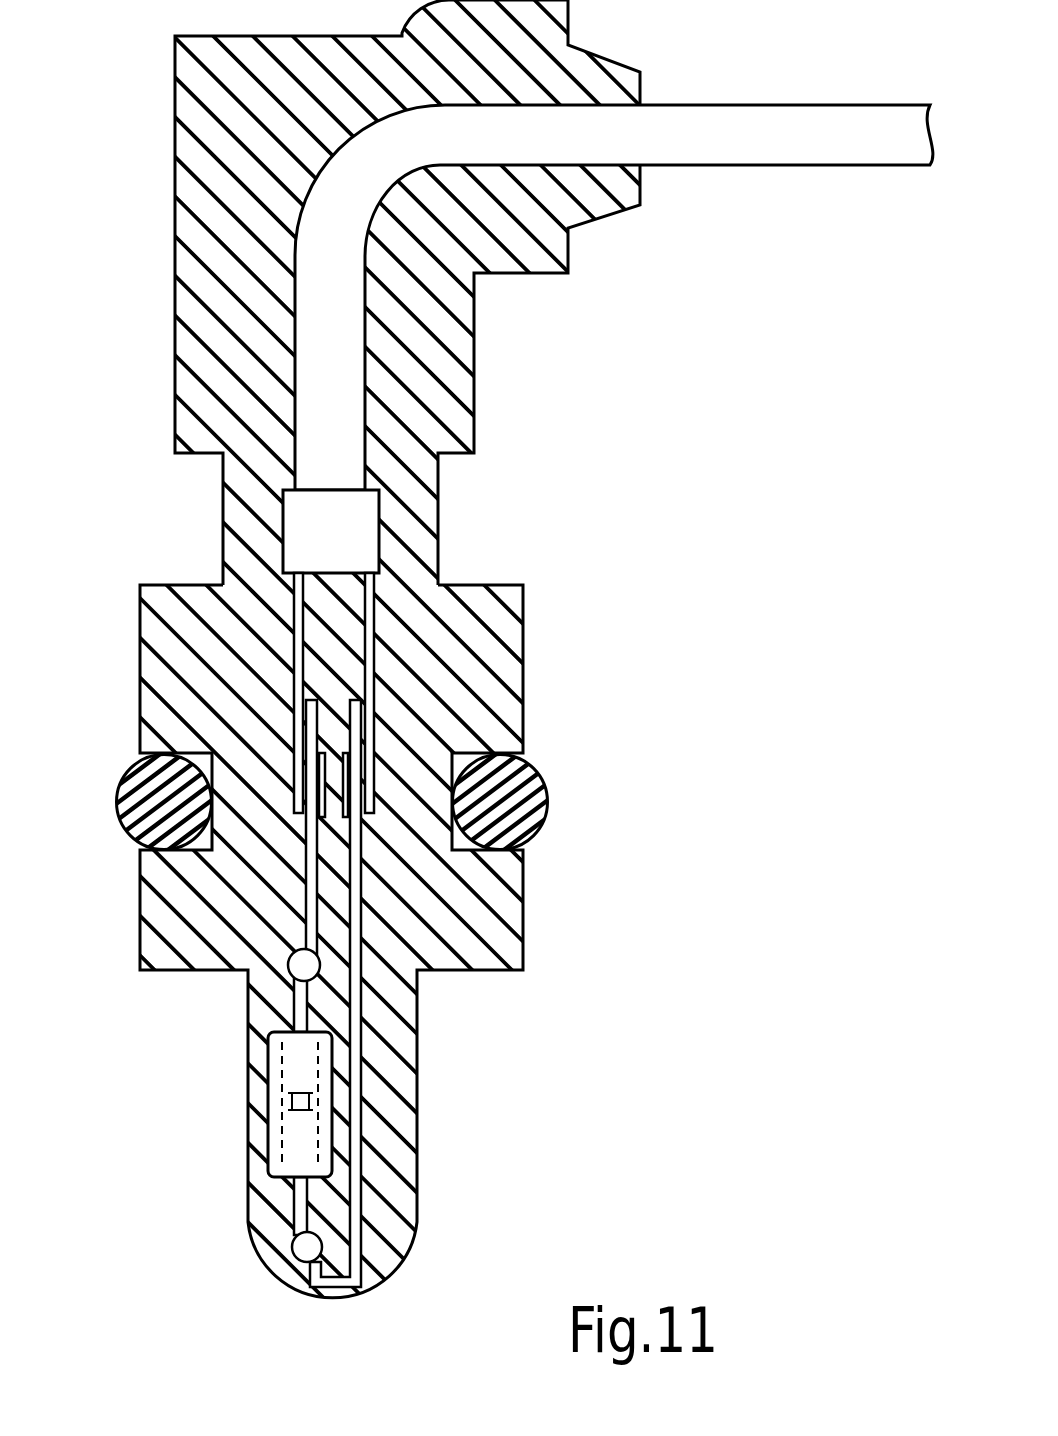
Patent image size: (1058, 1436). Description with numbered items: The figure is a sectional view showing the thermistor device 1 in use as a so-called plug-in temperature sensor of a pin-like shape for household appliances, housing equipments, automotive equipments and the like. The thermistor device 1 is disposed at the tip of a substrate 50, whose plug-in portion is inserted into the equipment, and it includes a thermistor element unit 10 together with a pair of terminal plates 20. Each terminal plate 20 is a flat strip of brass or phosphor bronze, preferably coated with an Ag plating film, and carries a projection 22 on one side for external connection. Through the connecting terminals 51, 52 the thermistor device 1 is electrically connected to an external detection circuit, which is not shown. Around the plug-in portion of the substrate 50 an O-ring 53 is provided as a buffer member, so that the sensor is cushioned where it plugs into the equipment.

The thermistor device 1 is at (263, 1120).
The thermistor element unit 10 is at (263, 1163).
The terminal plate 20 is at (303, 893).
The projection 22 is at (293, 777).
The substrate 50 is at (175, 362).
The connecting terminal 51 is at (377, 625).
The connecting terminal 52 is at (275, 615).
The O-ring 53 is at (547, 797).